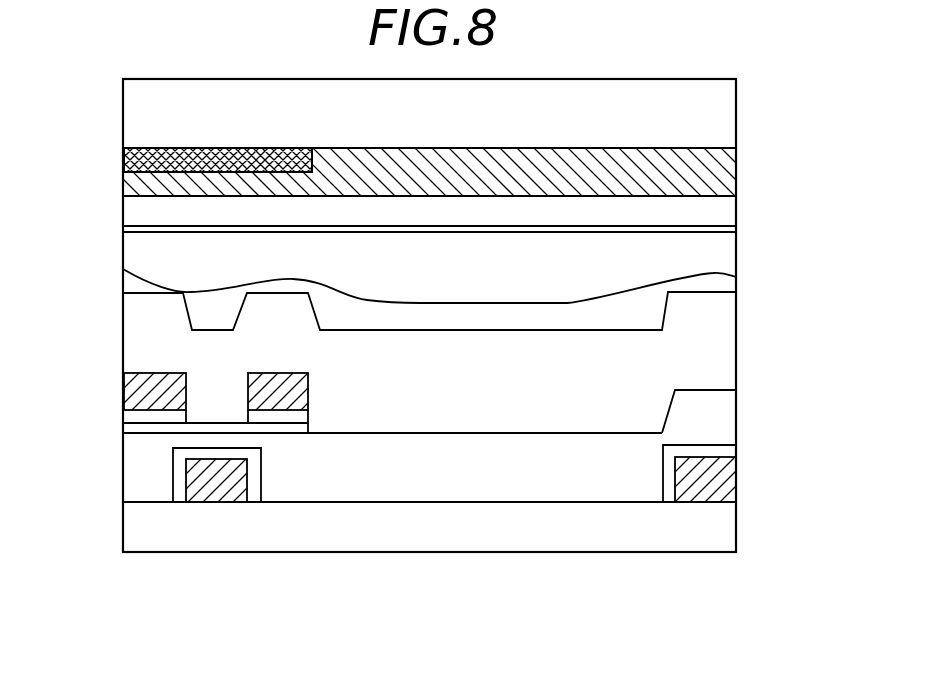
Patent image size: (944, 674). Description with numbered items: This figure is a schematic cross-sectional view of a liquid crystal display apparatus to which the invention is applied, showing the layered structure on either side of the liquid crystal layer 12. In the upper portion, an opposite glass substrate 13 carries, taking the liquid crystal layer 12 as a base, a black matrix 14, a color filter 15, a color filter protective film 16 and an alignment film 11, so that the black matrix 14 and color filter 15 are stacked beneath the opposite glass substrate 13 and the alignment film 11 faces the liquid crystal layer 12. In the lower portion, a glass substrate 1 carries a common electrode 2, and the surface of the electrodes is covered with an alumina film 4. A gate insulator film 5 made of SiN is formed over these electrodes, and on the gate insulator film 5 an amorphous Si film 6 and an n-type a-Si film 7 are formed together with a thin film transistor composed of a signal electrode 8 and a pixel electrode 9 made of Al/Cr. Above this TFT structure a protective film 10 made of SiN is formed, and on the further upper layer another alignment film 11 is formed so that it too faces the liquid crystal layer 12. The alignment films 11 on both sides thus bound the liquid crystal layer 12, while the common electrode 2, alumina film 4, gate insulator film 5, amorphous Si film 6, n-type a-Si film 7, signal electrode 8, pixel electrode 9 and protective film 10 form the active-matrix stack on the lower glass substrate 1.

The glass substrate 1 is at (160, 523).
The common electrode 2 is at (703, 487).
The alumina film 4 is at (253, 487).
The gate insulator film 5 is at (502, 475).
The amorphous Si film 6 is at (165, 429).
The n-type a-Si film 7 is at (140, 418).
The signal electrode 8 is at (132, 393).
The pixel electrode 9 is at (292, 397).
The protective film 10 is at (713, 360).
The alignment film 11 is at (135, 285).
The liquid crystal layer 12 is at (700, 260).
The opposite glass substrate 13 is at (150, 122).
The black matrix 14 is at (135, 157).
The color filter 15 is at (707, 160).
The color filter protective film 16 is at (707, 210).